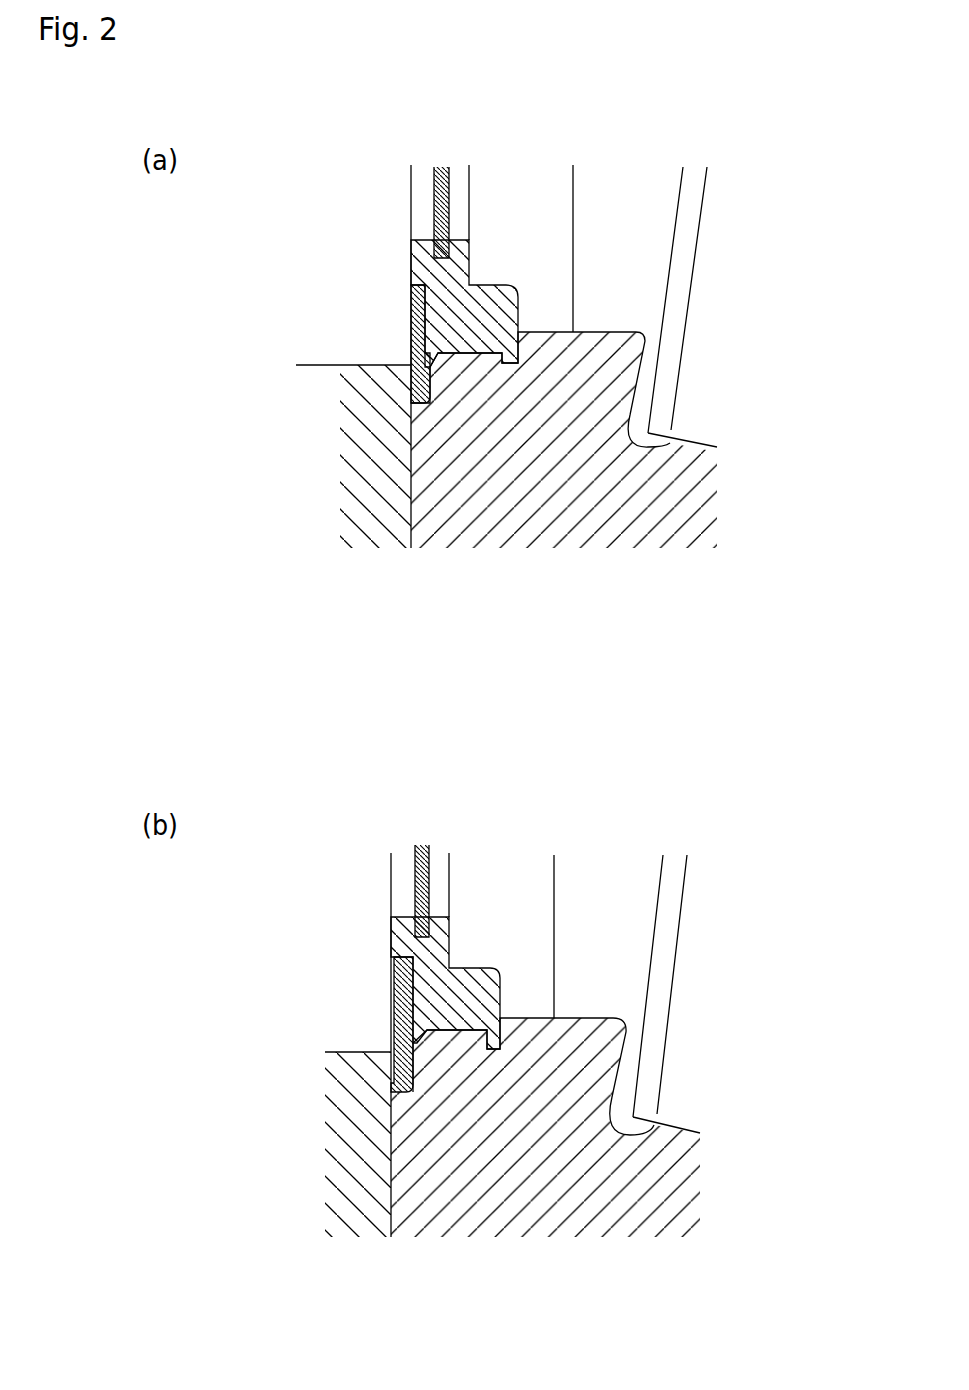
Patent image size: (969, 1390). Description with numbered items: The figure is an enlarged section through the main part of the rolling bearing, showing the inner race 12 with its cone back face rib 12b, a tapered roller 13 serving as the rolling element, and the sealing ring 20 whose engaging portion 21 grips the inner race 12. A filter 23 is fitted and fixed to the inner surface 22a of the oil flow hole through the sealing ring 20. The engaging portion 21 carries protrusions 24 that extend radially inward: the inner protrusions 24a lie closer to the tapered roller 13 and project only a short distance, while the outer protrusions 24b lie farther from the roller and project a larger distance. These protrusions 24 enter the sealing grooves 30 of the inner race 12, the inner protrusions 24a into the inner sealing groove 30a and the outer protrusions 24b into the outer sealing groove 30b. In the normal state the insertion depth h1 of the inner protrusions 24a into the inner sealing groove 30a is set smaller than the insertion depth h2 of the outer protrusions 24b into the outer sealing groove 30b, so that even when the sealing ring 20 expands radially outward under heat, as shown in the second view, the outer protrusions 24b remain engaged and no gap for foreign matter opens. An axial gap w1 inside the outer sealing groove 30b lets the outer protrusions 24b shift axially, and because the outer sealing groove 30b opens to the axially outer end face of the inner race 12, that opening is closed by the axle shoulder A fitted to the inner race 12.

The inner race 12 is at (585, 507).
The cone back face rib 12b is at (627, 360).
The tapered roller 13 is at (702, 265).
The sealing ring 20 is at (380, 194).
The engaging portion 21 is at (479, 282).
The inner surfaces 22a is at (420, 233).
The filter 23 is at (447, 207).
The protrusions 24 is at (370, 613).
The inner protrusions 24a is at (500, 362).
The outer protrusions 24b is at (408, 430).
The sealing grooves 30 is at (331, 210).
The inner sealing groove 30a is at (427, 318).
The outer sealing groove 30b is at (446, 322).
The axle shoulder A is at (381, 383).
The axial gap w1 is at (447, 320).
The depth h1 is at (554, 400).
The depth h2 is at (411, 405).